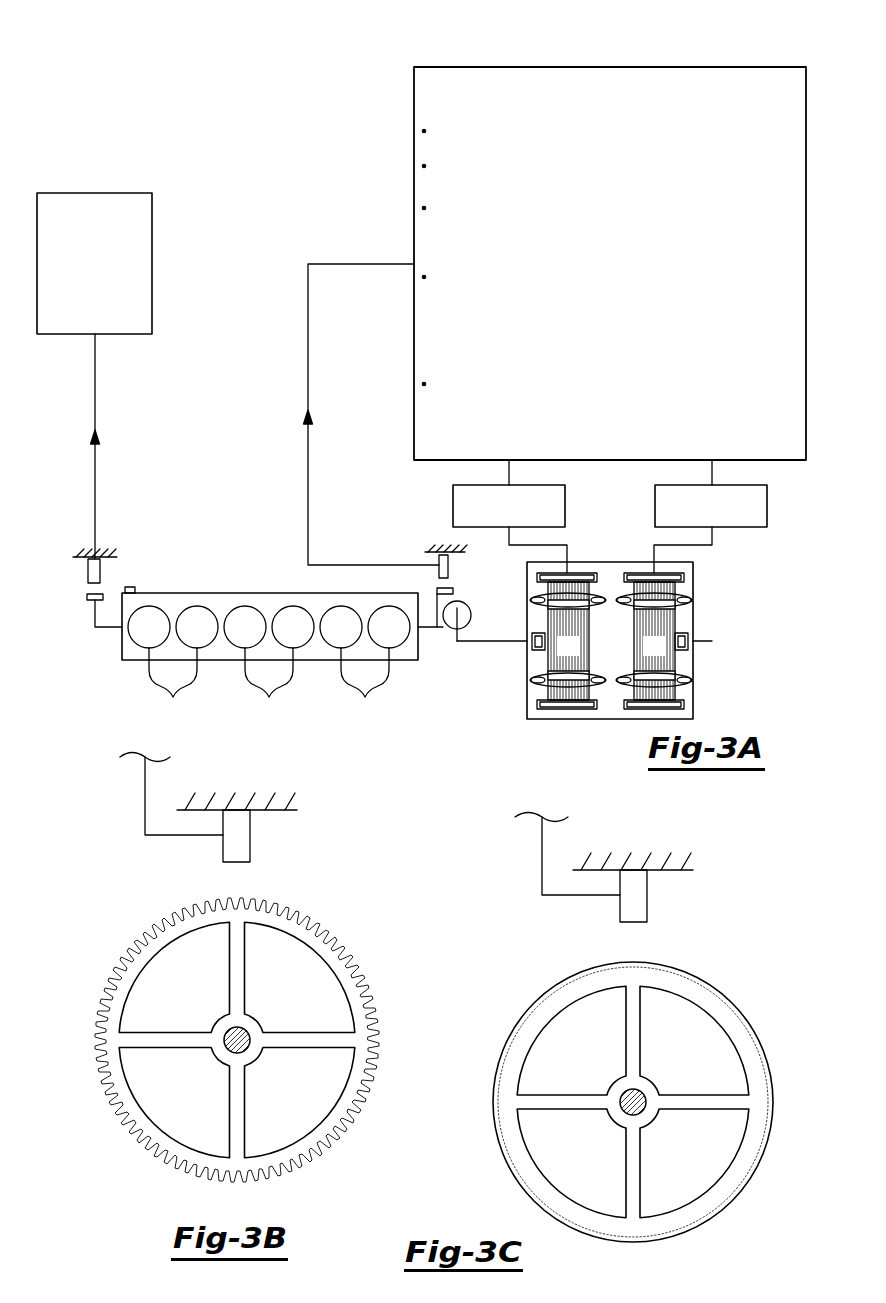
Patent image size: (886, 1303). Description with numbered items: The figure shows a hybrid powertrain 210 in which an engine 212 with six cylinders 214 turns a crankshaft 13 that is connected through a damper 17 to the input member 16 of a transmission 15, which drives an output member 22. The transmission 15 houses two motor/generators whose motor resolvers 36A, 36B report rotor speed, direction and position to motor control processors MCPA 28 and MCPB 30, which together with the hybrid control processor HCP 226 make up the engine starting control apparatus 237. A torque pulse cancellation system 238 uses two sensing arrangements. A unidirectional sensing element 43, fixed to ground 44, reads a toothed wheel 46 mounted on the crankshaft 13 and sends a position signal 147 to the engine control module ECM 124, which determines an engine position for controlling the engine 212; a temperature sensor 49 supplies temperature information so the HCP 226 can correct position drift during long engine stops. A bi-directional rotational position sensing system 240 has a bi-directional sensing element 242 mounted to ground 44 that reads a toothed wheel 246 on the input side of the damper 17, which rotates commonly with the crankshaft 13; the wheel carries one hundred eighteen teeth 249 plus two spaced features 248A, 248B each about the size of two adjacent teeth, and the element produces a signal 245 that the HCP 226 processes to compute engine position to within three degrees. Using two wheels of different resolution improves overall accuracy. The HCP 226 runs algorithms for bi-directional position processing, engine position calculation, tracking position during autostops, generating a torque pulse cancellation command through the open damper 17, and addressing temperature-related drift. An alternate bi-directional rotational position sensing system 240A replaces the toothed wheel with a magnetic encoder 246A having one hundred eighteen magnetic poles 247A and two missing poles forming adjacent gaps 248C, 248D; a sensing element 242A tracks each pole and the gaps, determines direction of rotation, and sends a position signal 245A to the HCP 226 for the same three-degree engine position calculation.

In FIG. 3A, the engine control module (ECM) 124 is at (95, 193).
In FIG. 3A, the position signal 147 is at (95, 390).
In FIG. 3A, the ground 44 is at (74, 556).
In FIG. 3B, the ground 44 is at (290, 801).
In FIG. 3C, the ground 44 is at (685, 861).
In FIG. 3A, the unidirectional sensing element 43 is at (88, 570).
In FIG. 3A, the toothed wheel 46 is at (93, 604).
In FIG. 3A, the crankshaft 13 is at (108, 629).
In FIG. 3B, the crankshaft 13 is at (226, 1032).
In FIG. 3C, the crankshaft 13 is at (621, 1094).
In FIG. 3A, the engine 212 is at (270, 593).
In FIG. 3A, the cylinders 214 is at (269, 685).
In FIG. 3A, the temperature sensor 49 is at (133, 588).
In FIG. 3A, the toothed wheel 246 is at (437, 590).
In FIG. 3B, the toothed wheel 246 is at (386, 954).
In FIG. 3A, the damper 17 is at (453, 638).
In FIG. 3A, the bi-directional sensing element 242 is at (448, 566).
In FIG. 3B, the bi-directional sensing element 242 is at (250, 835).
In FIG. 3A, the position signal 245 is at (308, 347).
In FIG. 3B, the position signal 245 is at (145, 821).
In FIG. 3A, the torque pulse cancellation system 238 is at (283, 478).
In FIG. 3A, the engine starting control apparatus 237 is at (393, 142).
In FIG. 3A, the hybrid control processor (HCP) 226 is at (545, 67).
In FIG. 3A, the hybrid powertrain 210 is at (746, 55).
In FIG. 3A, the motor control processor (MCPA) 28 is at (453, 509).
In FIG. 3A, the motor control processor (MCPB) 30 is at (767, 509).
In FIG. 3A, the transmission 15 is at (611, 562).
In FIG. 3A, the motor resolver 36A is at (540, 656).
In FIG. 3A, the motor resolver 36B is at (684, 656).
In FIG. 3A, the input member 16 is at (480, 639).
In FIG. 3A, the output member 22 is at (698, 641).
In FIG. 3B, the spaced feature 248A is at (231, 902).
In FIG. 3B, the spaced feature 248B is at (243, 902).
In FIG. 3B, the bi-directional rotational position sensing system 240 is at (95, 1153).
In FIG. 3B, the teeth 249 is at (111, 978).
In FIG. 3C, the position signal 245A is at (542, 881).
In FIG. 3C, the sensing element 242A is at (647, 895).
In FIG. 3C, the gap 248C is at (627, 960).
In FIG. 3C, the gap 248D is at (641, 960).
In FIG. 3C, the alternate bi-directional rotational position sensing system 240A is at (485, 1183).
In FIG. 3C, the magnetic poles 247A is at (510, 1034).
In FIG. 3C, the magnetic encoder 246A is at (764, 1007).